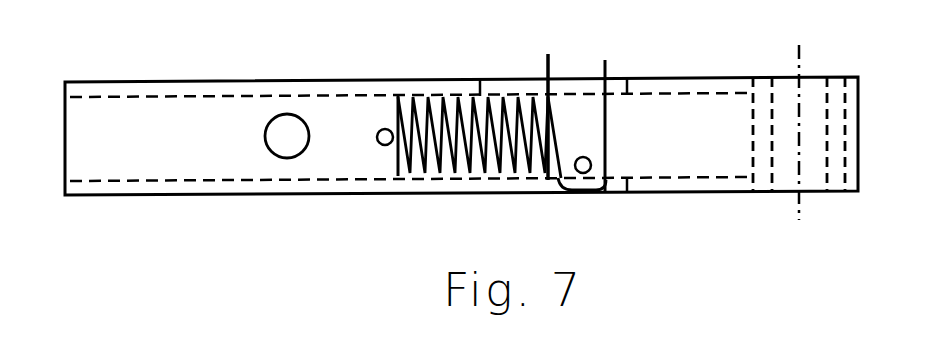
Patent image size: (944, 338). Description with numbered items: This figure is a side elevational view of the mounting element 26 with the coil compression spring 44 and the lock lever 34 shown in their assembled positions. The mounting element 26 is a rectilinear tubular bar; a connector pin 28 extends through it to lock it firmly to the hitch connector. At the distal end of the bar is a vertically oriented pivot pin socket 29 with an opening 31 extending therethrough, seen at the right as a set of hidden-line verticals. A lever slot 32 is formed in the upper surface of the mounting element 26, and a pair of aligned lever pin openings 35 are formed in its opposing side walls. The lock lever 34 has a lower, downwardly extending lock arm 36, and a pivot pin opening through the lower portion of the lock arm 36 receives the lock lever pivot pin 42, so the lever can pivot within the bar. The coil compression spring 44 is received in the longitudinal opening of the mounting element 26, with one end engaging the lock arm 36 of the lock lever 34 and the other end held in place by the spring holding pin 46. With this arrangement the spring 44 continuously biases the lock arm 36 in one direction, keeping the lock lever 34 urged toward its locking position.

The mounting element 26 is at (218, 198).
The connector pin 28 is at (293, 146).
The pivot pin socket 29 is at (764, 78).
The opening 31 is at (814, 78).
The lever slot 32 is at (518, 80).
The lock lever 34 is at (607, 66).
The lever pin openings 35 is at (537, 2).
The lock arm 36 is at (585, 135).
The lock lever pivot pin 42 is at (591, 163).
The coil compression spring 44 is at (450, 97).
The spring holding pin 46 is at (378, 128).